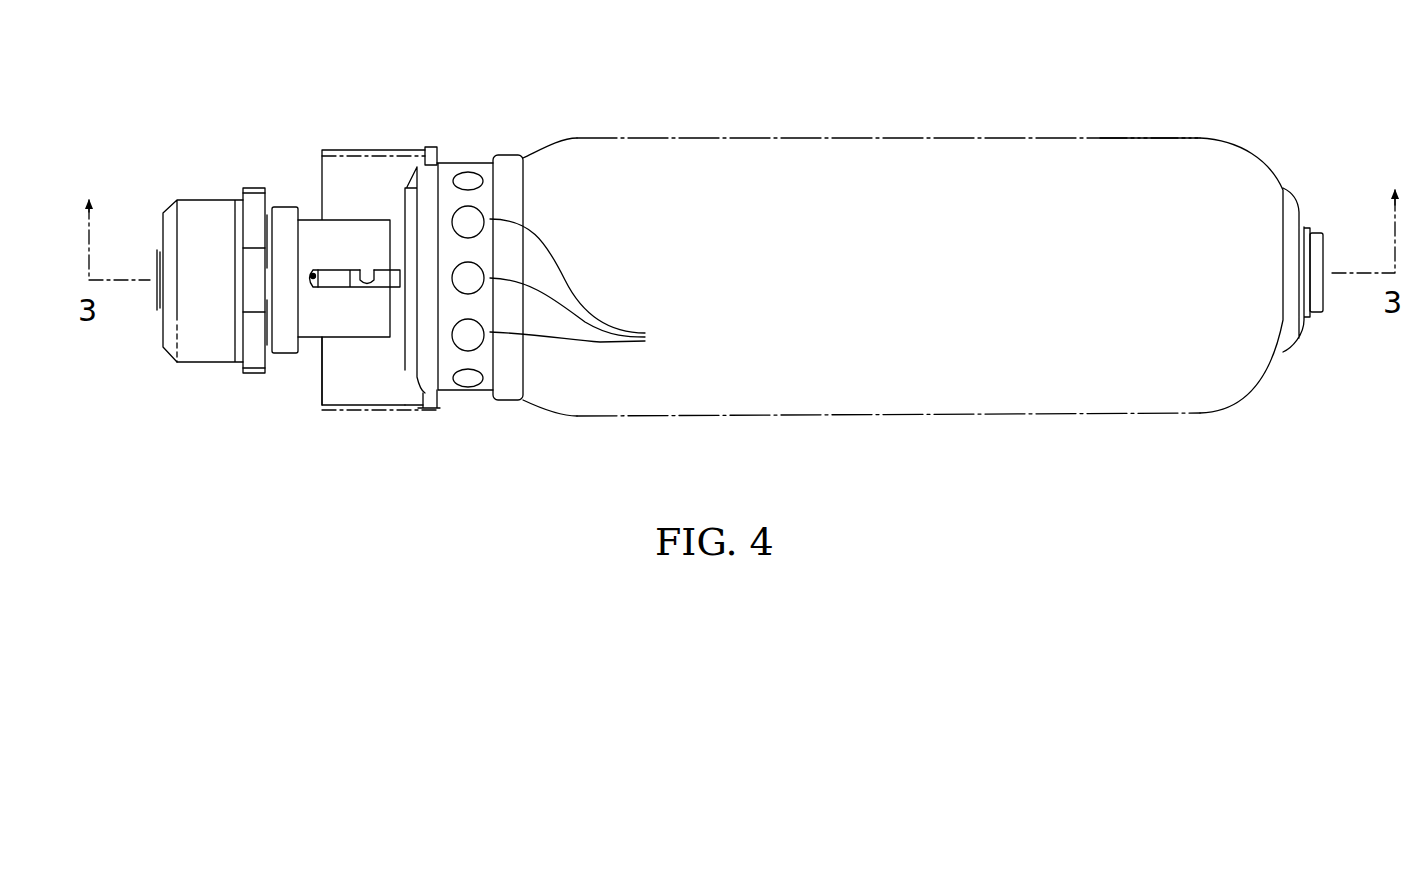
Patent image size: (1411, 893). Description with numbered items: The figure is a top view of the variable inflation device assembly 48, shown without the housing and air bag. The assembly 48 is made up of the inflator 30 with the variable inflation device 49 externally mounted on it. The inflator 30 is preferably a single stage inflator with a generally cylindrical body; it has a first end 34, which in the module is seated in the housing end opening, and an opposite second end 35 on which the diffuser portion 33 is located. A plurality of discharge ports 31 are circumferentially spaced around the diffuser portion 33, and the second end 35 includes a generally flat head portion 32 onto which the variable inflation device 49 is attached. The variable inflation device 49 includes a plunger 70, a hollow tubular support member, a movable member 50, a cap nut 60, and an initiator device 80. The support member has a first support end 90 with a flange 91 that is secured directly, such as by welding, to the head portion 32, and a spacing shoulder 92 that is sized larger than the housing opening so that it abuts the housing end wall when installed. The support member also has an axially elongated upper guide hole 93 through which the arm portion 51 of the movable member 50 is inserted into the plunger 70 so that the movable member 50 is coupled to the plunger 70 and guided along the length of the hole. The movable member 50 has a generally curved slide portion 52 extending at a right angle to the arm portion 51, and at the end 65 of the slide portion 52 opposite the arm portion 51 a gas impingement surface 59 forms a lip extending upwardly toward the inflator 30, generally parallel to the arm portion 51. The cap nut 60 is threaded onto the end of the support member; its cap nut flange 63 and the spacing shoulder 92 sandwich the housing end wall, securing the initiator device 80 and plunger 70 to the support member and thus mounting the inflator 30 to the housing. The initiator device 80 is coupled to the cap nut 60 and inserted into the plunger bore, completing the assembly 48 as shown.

The inflator 30 is at (864, 134).
The discharge ports 31 is at (583, 284).
The head portion 32 is at (414, 205).
The diffuser portion 33 is at (491, 155).
The first end 34 is at (1240, 148).
The second end 35 is at (620, 152).
The variable inflation device assembly 48 is at (1130, 120).
The variable inflation device 49 is at (257, 412).
The movable member 50 is at (347, 410).
The arm portion 51 is at (313, 275).
The slide portion 52 is at (392, 400).
The gas impingement surface 59 is at (418, 412).
The cap nut 60 is at (177, 200).
The cap nut flange 63 is at (250, 198).
The end 65 is at (437, 157).
The plunger 70 is at (338, 272).
The initiator device 80 is at (155, 307).
The first support end 90 is at (483, 228).
The flange 91 is at (408, 190).
The spacing shoulder 92 is at (287, 220).
The upper guide hole 93 is at (375, 271).